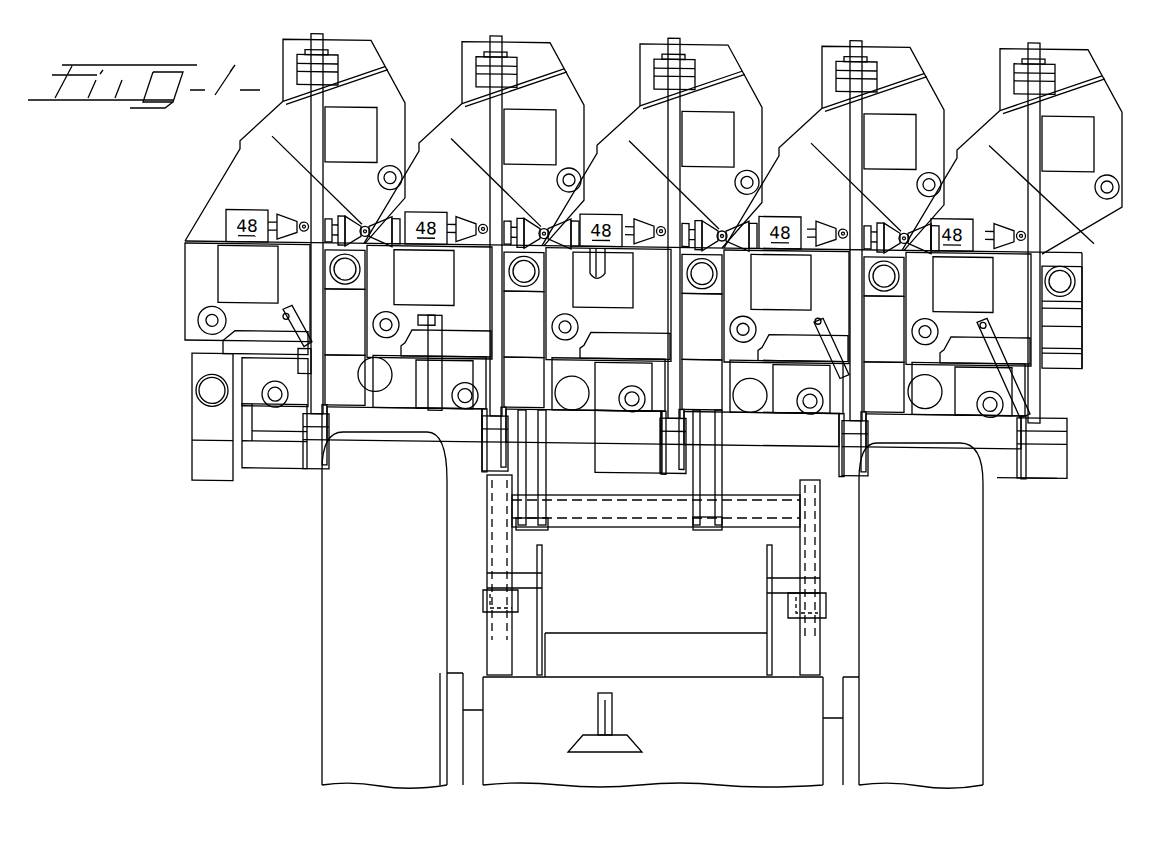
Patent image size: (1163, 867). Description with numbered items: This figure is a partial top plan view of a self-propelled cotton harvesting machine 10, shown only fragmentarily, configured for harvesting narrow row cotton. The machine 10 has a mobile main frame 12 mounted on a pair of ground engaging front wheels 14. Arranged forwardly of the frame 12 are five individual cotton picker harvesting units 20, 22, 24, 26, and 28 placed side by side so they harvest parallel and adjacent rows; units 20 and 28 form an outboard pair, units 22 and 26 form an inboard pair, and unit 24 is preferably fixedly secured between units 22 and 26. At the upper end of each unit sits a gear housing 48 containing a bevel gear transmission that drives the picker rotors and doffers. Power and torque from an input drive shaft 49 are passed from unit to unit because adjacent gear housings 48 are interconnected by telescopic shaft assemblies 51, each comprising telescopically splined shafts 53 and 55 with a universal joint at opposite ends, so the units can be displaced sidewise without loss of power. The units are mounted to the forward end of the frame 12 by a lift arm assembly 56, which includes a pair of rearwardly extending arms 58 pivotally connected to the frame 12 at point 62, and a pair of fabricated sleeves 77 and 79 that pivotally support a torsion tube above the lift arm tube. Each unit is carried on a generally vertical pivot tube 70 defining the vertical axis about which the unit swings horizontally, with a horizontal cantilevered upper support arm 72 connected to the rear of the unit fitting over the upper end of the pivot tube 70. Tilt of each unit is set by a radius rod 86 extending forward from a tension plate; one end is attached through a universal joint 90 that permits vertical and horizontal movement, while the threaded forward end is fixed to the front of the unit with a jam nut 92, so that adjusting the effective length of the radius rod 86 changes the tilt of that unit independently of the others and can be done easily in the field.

The cotton harvesting machine 10 is at (264, 610).
The mobile main frame 12 is at (750, 740).
The ground engaging front wheels 14 is at (376, 586).
The cotton picker harvesting unit 20 is at (380, 70).
The cotton picker harvesting unit 22 is at (564, 70).
The cotton picker harvesting unit 24 is at (738, 68).
The cotton picker harvesting unit 26 is at (940, 68).
The cotton picker harvesting unit 28 is at (1114, 69).
The gear housing 48 is at (599, 231).
The input drive shaft 49 is at (601, 266).
The telescopic shaft assembly 51 is at (364, 223).
The telescopically splined shaft 53 is at (328, 216).
The telescopically splined shaft 55 is at (341, 213).
The lift arm assembly 56 is at (643, 527).
The rearwardly extending arms 58 is at (497, 500).
The pivot point 62 is at (480, 598).
The vertical pivot tube 70 is at (276, 380).
The upper support arm 72 is at (252, 370).
The fabricated sleeve 77 is at (538, 530).
The fabricated sleeve 79 is at (700, 530).
The radius rod 86 is at (316, 136).
The universal joint 90 is at (318, 452).
The jam nut 92 is at (329, 50).